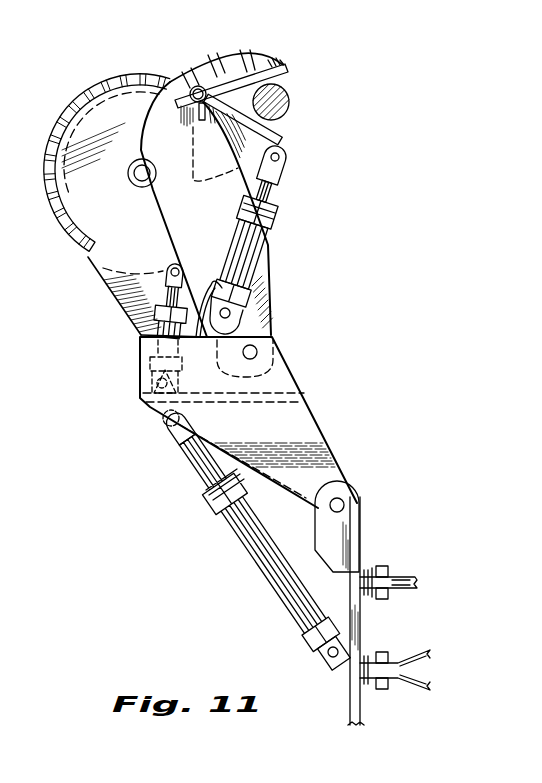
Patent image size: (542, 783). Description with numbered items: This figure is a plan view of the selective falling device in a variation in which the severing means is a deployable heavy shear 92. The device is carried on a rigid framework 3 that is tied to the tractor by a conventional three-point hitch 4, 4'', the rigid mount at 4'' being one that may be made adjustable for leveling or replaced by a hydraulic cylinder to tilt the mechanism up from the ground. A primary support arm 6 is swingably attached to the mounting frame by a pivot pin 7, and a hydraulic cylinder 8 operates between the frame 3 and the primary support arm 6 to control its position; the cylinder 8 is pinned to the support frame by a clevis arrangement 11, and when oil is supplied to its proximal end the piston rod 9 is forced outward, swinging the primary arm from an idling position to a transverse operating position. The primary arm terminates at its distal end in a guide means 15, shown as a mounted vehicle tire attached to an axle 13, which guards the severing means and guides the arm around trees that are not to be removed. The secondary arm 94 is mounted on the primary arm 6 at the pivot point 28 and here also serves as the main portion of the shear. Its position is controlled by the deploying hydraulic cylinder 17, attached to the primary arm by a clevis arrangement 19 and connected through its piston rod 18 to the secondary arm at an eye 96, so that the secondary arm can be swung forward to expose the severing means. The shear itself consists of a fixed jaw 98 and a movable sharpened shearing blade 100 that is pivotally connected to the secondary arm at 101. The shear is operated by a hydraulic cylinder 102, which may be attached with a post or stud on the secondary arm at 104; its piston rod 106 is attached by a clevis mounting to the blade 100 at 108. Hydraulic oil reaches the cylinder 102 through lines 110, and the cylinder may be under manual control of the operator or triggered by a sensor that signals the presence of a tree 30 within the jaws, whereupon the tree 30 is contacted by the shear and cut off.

The rigid framework 3 is at (362, 549).
The three-point hitch 4 is at (400, 571).
The three-point hitch rigid mount 4'' is at (400, 650).
The primary support arm 6 is at (308, 430).
The pivot pin 7 is at (346, 505).
The hydraulic cylinder 8 is at (251, 564).
The piston rod 9 is at (194, 463).
The clevis arrangement 11 is at (330, 664).
The axle 13 is at (134, 175).
The guide means 15 is at (78, 97).
The hydraulic cylinder 17 is at (140, 334).
The piston rod 18 is at (125, 311).
The clevis arrangement 19 is at (150, 384).
The pivot pin 28 is at (258, 360).
The tree 30 is at (290, 107).
The shear 92 is at (288, 249).
The secondary arm 94 is at (268, 303).
The eye 96 is at (176, 262).
The fixed jaw 98 is at (272, 56).
The shearing blade 100 is at (288, 132).
The pivot 101 is at (199, 86).
The hydraulic cylinder 102 is at (252, 263).
The post or stud 104 is at (240, 318).
The piston rod 106 is at (275, 193).
The clevis mounting 108 is at (288, 163).
The hydraulic lines 110 is at (204, 274).